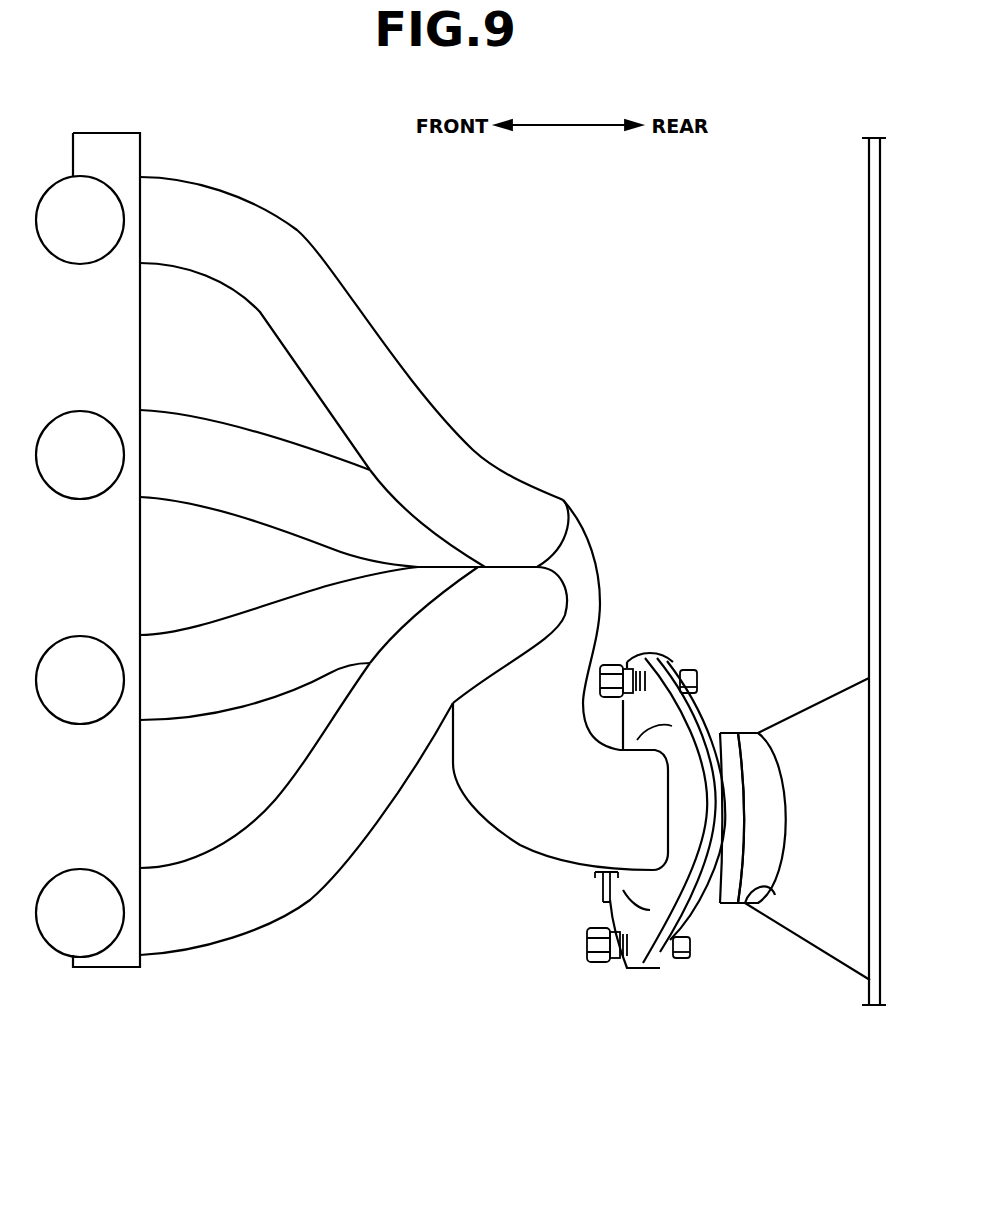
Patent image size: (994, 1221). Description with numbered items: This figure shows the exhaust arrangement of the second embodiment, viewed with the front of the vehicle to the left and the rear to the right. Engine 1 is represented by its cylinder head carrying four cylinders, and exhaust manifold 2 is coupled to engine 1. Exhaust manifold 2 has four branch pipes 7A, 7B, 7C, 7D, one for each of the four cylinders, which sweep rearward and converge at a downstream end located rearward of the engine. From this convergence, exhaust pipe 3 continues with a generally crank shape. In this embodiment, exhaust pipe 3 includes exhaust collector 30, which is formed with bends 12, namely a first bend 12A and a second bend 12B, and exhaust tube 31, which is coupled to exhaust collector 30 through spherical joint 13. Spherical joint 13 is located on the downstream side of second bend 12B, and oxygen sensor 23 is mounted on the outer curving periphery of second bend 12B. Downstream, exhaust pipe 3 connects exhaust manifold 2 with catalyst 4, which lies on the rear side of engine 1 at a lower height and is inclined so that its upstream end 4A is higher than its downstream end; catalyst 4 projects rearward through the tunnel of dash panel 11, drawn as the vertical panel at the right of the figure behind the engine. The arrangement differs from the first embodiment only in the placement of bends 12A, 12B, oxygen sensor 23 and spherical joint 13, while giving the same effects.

The engine 1 is at (115, 952).
The exhaust manifold 2 is at (354, 593).
The exhaust pipe 3 is at (673, 796).
The catalyst 4 is at (795, 840).
The upstream end 4A is at (762, 905).
The branch pipe 7A is at (183, 935).
The branch pipe 7B is at (183, 705).
The branch pipe 7C is at (183, 480).
The branch pipe 7D is at (183, 264).
The dash panel 11 is at (868, 340).
The bend 12 is at (558, 702).
The first bend 12A is at (587, 593).
The second bend 12B is at (482, 798).
The spherical joint 13 is at (620, 970).
The oxygen sensor 23 is at (593, 890).
The exhaust collector 30 is at (583, 667).
The exhaust tube 31 is at (747, 742).